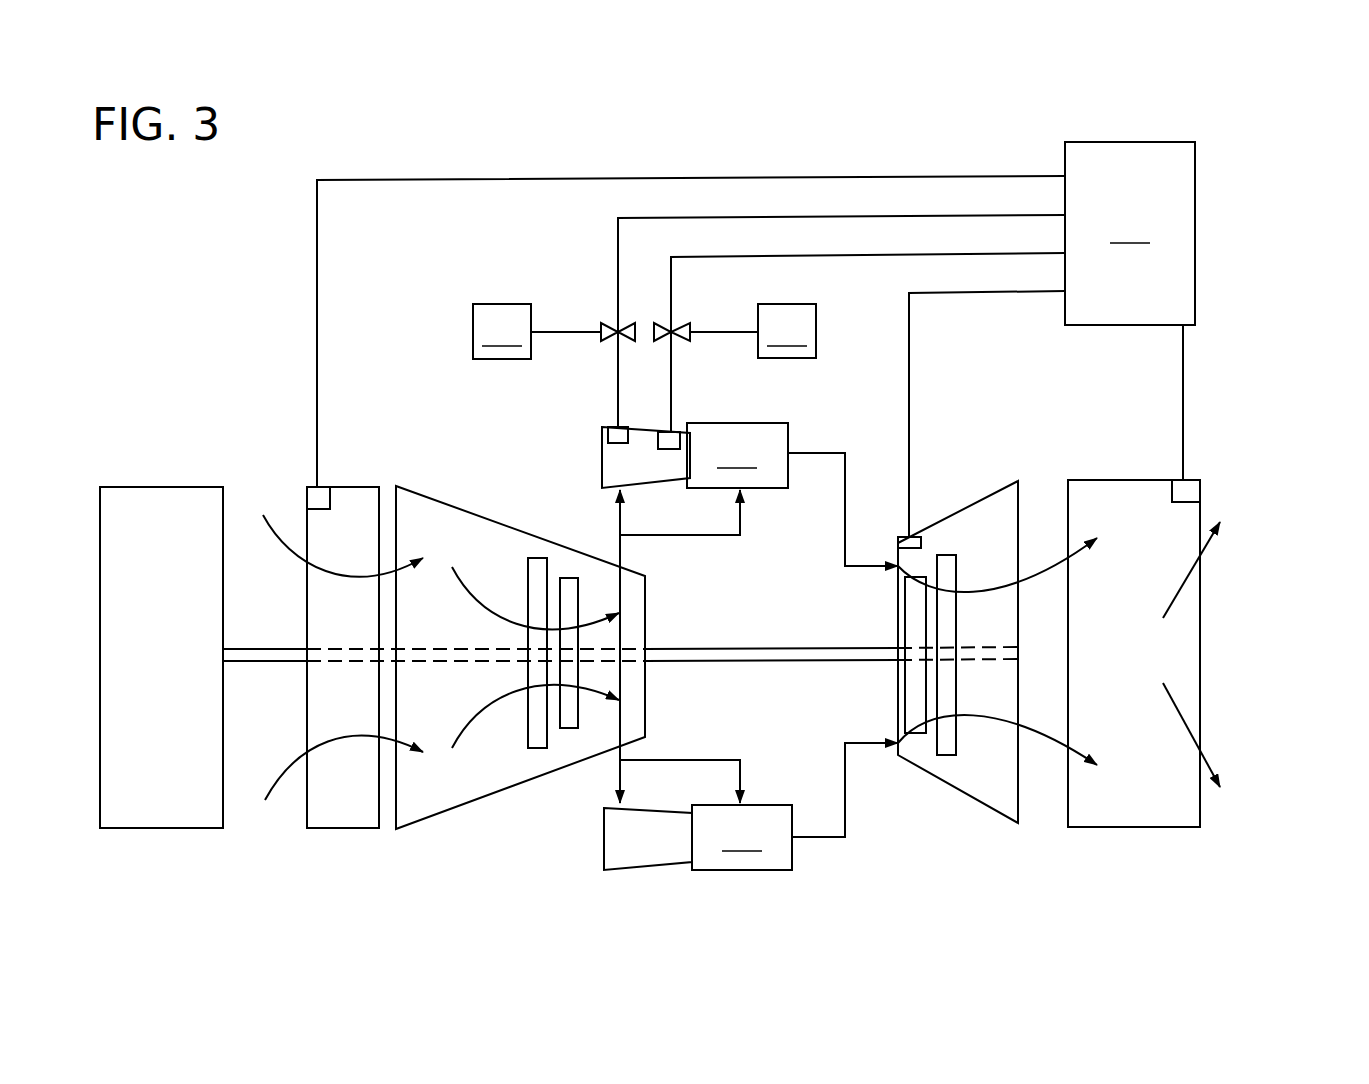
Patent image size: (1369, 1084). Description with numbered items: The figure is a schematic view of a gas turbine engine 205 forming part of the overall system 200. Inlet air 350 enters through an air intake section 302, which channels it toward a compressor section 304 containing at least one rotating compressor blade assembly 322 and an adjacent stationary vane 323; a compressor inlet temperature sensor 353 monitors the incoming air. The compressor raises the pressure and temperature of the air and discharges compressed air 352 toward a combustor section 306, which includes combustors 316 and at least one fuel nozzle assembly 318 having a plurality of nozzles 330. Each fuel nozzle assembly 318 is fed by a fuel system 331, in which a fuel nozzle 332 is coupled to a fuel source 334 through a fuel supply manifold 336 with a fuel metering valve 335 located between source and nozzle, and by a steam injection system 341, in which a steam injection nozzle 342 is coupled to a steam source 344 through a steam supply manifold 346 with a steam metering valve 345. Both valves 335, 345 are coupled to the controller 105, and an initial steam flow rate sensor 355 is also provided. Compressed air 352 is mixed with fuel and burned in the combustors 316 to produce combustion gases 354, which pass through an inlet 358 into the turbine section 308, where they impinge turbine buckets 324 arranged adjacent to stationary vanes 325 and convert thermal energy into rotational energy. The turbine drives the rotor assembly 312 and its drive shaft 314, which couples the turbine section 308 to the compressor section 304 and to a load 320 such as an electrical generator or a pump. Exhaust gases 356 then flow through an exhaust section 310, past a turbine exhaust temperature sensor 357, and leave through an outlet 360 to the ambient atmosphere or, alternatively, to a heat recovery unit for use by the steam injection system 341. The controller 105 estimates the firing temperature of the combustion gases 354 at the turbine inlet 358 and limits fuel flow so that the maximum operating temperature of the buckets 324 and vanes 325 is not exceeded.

The controller 105 is at (756, 339).
The gas turbine system 200 is at (1243, 177).
The gas turbine engine 205 is at (187, 320).
The air intake section 302 is at (343, 483).
The compressor section 304 is at (435, 498).
The combustor section 306 is at (938, 402).
The turbine section 308 is at (985, 490).
The exhaust section 310 is at (1155, 477).
The rotor assembly 312 is at (713, 643).
The drive shaft 314 is at (813, 663).
The combustor 316 is at (792, 646).
The fuel nozzle assembly 318 is at (637, 492).
The load 320 is at (160, 485).
The compressor blade assembly 322 is at (572, 728).
The stationary vane assembly 323 is at (542, 750).
The turbine bucket 324 is at (912, 735).
The stationary vane assembly 325 is at (948, 755).
The nozzles 330 is at (627, 458).
The fuel system 331 is at (517, 383).
The fuel nozzle 332 is at (613, 430).
The fuel source 334 is at (537, 331).
The fuel metering valve 335 is at (612, 323).
The fuel supply manifold 336 is at (618, 380).
The steam injection system 341 is at (758, 377).
The steam injection nozzle 342 is at (680, 432).
The steam source 344 is at (753, 331).
The steam metering valve 345 is at (680, 323).
The steam supply manifold 346 is at (675, 372).
The inlet air 350 is at (275, 542).
The compressed air 352 is at (487, 608).
The compressor inlet temperature sensor 353 is at (313, 498).
The combustion gases 354 is at (1043, 573).
The initial steam flow rate sensor 355 is at (907, 540).
The exhaust gases 356 is at (1225, 545).
The turbine exhaust temperature sensor 357 is at (1197, 490).
The inlet 358 is at (895, 582).
The outlet 360 is at (1200, 605).